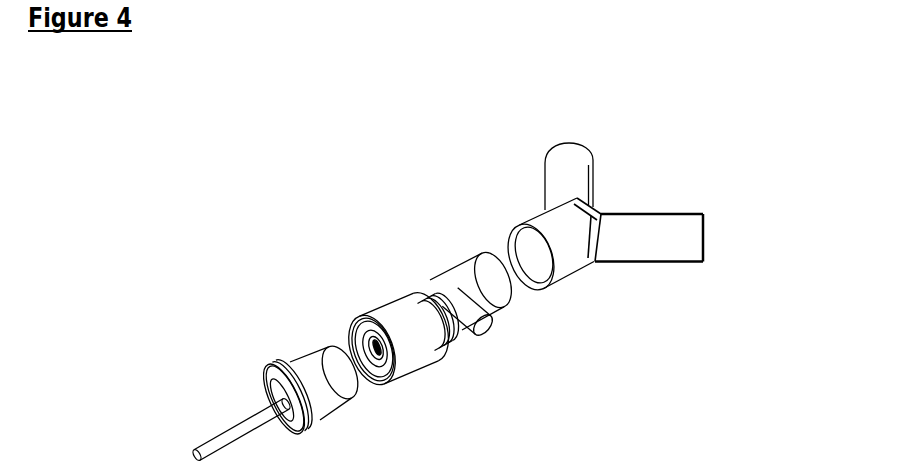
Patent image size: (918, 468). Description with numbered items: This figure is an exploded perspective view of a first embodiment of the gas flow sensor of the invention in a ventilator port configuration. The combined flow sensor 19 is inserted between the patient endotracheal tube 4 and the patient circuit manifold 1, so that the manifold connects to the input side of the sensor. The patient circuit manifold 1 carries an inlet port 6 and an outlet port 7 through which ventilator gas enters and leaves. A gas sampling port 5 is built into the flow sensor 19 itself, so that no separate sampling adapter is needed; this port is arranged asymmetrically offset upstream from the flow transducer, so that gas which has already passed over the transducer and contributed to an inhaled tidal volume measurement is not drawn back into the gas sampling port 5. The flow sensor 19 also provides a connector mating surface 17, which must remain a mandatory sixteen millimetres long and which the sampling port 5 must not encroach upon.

The patient circuit manifold 1 is at (533, 210).
The patient endotracheal tube 4 is at (253, 397).
The gas sampling port 5 is at (497, 333).
The inlet port 6 is at (703, 232).
The outlet port 7 is at (570, 137).
The connector mating surface 17 is at (493, 303).
The combined flow sensor 19 is at (420, 287).